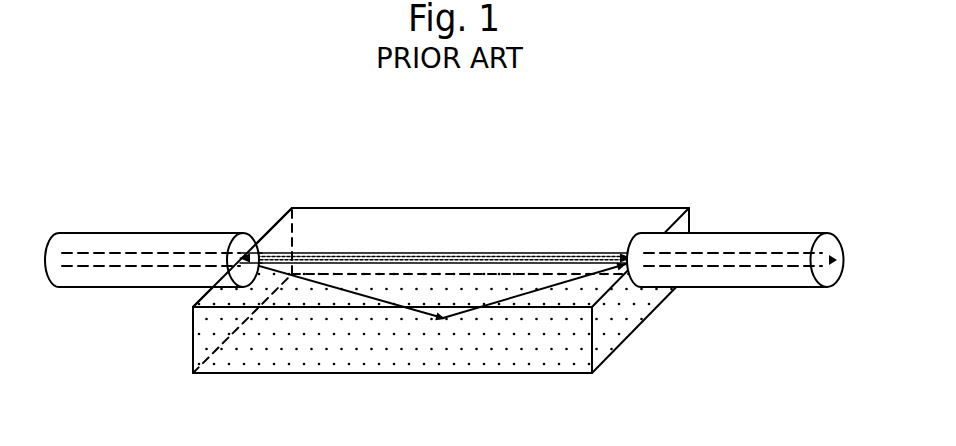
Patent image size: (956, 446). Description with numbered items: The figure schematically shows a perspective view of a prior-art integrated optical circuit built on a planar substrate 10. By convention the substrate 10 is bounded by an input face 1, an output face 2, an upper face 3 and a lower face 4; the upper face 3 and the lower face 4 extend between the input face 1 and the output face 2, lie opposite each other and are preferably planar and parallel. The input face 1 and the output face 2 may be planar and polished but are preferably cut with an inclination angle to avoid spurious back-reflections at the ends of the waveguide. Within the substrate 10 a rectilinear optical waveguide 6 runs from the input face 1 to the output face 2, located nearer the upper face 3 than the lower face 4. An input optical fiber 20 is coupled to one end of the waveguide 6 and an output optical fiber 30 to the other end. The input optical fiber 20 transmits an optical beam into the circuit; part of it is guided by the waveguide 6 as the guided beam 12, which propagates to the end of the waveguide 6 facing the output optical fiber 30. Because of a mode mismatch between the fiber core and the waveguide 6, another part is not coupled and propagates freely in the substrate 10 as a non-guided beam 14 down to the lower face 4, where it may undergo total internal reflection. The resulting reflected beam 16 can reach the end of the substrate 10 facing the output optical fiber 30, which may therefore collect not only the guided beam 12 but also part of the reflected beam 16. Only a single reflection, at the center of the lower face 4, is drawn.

The input face 1 is at (210, 331).
The output face 2 is at (684, 228).
The upper face 3 is at (435, 218).
The lower face 4 is at (540, 363).
The optical waveguide 6 is at (331, 253).
The substrate 10 is at (651, 212).
The guided beam 12 is at (587, 253).
The non-guided beam 14 is at (318, 278).
The reflected beam 16 is at (612, 293).
The input optical fiber 20 is at (102, 240).
The output optical fiber 30 is at (730, 240).